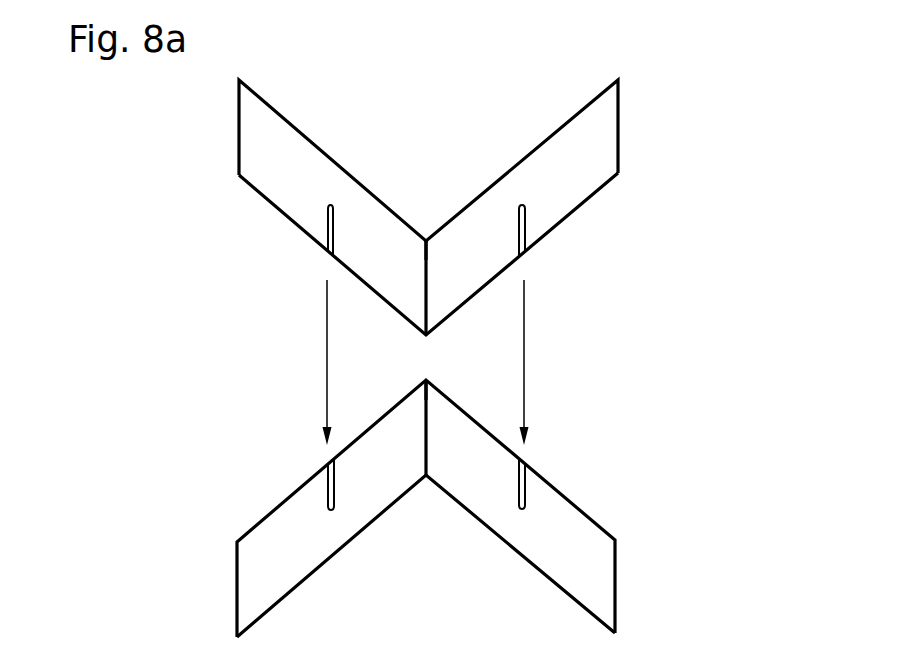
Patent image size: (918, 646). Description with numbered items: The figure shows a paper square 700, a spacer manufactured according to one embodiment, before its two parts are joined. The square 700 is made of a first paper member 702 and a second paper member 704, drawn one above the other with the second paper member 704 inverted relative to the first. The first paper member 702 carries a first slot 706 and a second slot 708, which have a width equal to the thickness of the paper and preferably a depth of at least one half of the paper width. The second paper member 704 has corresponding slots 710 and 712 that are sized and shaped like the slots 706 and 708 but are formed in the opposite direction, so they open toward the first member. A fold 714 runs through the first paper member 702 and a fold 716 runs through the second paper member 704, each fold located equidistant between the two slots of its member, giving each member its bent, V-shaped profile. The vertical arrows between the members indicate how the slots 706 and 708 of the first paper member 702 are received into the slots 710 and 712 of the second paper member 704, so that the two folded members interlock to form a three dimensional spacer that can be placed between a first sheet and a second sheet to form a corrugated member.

The paper square 700 is at (640, 205).
The first paper member 702 is at (236, 138).
The second paper member 704 is at (255, 527).
The first slot 706 is at (326, 254).
The second slot 708 is at (528, 247).
The slot 710 is at (327, 462).
The slot 712 is at (526, 462).
The fold 714 is at (425, 240).
The fold 716 is at (425, 379).